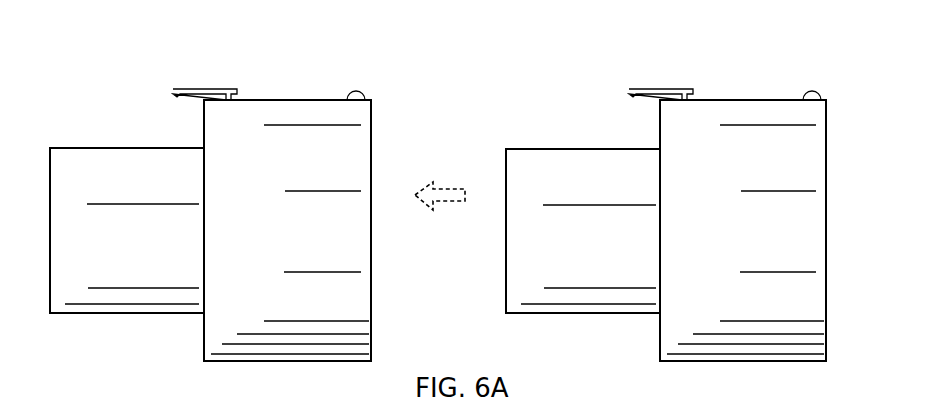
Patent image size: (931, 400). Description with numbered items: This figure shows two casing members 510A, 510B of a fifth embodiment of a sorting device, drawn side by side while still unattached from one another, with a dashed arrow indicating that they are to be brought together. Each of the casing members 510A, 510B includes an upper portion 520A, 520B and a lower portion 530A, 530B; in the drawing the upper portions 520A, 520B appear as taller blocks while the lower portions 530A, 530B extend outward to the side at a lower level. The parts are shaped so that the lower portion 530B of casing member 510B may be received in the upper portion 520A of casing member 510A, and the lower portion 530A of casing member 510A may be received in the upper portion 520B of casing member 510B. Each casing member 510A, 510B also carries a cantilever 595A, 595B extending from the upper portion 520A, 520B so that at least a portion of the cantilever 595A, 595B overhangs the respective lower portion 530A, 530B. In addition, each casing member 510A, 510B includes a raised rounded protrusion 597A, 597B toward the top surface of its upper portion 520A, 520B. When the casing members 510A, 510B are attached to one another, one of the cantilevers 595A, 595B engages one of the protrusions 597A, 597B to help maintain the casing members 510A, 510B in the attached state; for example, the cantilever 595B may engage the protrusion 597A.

The casing member 510A is at (266, 62).
The casing member 510B is at (722, 62).
The upper portion 520A is at (311, 170).
The upper portion 520B is at (767, 170).
The lower portion 530A is at (151, 189).
The lower portion 530B is at (608, 189).
The cantilever 595A is at (200, 89).
The cantilever 595B is at (656, 89).
The raised rounded protrusion 597A is at (356, 91).
The raised rounded protrusion 597B is at (812, 91).